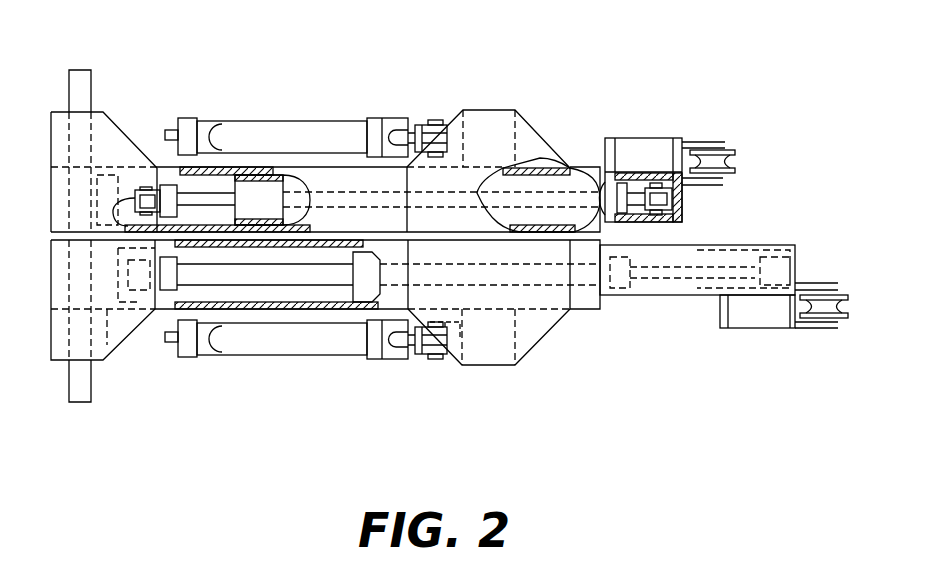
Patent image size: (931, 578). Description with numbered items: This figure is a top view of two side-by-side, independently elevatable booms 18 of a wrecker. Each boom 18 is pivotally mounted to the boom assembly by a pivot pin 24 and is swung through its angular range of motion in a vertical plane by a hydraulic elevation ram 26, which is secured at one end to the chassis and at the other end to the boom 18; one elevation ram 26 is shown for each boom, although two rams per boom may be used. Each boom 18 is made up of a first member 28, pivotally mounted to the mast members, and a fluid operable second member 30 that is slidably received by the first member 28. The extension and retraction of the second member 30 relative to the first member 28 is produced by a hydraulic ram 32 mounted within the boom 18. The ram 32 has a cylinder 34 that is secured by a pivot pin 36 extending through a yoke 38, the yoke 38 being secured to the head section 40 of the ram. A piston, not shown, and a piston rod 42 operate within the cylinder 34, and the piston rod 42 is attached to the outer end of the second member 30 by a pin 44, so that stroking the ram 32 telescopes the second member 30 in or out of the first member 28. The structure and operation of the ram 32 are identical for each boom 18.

The boom 18 is at (558, 140).
The pivot pin 24 is at (72, 402).
The hydraulic elevation ram 26 is at (293, 128).
The first member 28 is at (336, 175).
The second member 30 is at (660, 232).
The hydraulic ram 32 is at (217, 188).
The cylinder 34 is at (187, 195).
The pivot pin 36 is at (140, 187).
The yoke 38 is at (133, 190).
The head section 40 is at (165, 193).
The piston rod 42 is at (633, 197).
The pin 44 is at (660, 187).